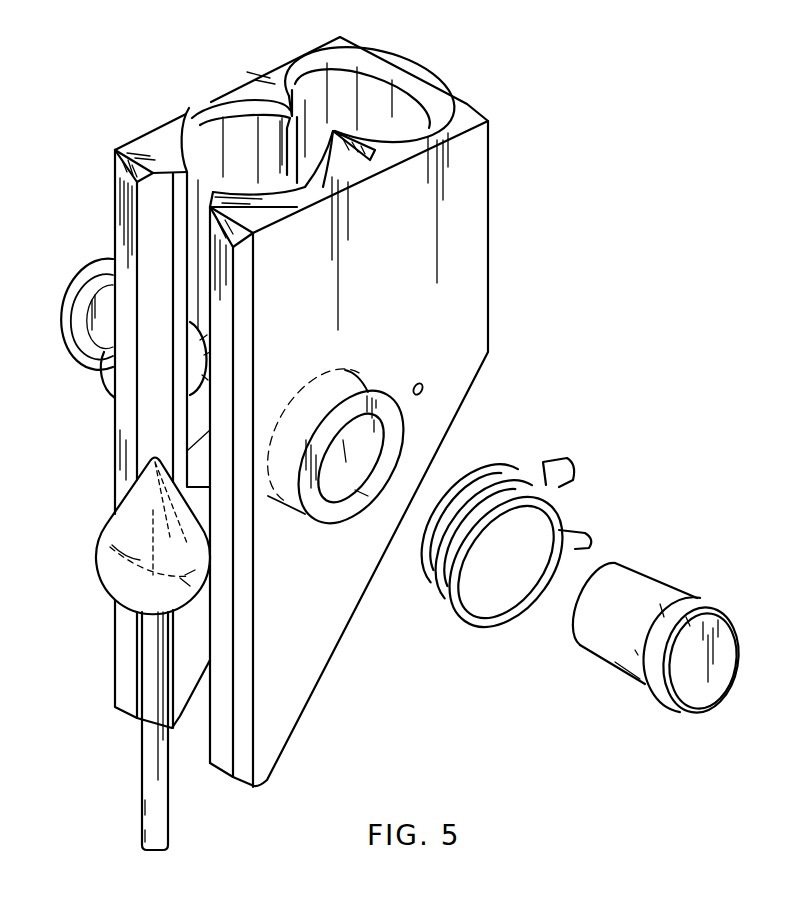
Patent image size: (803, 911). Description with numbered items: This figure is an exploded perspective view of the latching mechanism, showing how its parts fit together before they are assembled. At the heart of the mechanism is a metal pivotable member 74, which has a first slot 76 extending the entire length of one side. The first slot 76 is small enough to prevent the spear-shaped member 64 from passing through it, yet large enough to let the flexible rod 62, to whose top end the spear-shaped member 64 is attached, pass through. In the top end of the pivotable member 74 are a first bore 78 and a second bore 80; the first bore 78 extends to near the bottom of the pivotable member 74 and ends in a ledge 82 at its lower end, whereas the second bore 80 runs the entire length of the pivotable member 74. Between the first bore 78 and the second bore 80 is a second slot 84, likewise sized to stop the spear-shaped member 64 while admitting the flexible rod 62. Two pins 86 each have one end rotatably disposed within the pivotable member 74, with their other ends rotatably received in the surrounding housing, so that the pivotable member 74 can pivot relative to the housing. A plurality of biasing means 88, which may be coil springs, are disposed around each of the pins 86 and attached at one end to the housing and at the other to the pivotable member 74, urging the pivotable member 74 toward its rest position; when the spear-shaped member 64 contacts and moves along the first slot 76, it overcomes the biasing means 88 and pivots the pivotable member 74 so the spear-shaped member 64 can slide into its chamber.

The flexible rod 62 is at (160, 823).
The spear-shaped member 64 is at (164, 604).
The pivotable member 74 is at (477, 212).
The first slot 76 is at (150, 403).
The first bore 78 is at (204, 123).
The second bore 80 is at (420, 83).
The ledge 82 is at (97, 268).
The second slot 84 is at (303, 95).
The pins 86 is at (640, 592).
The biasing means 88 is at (562, 514).